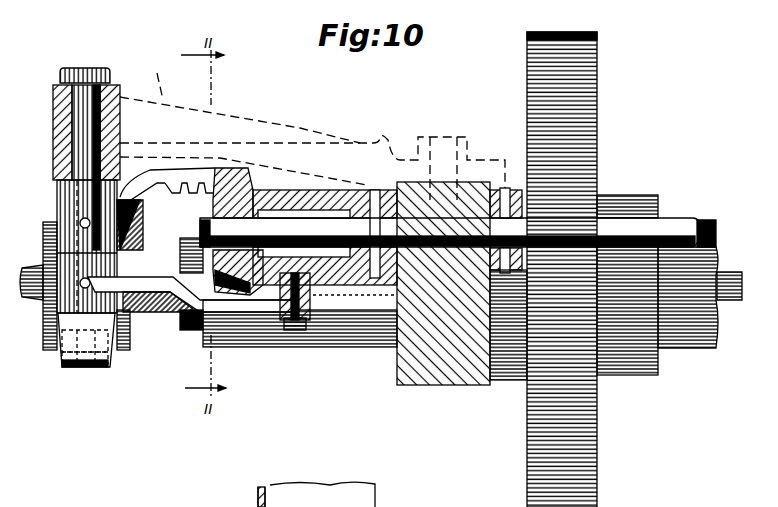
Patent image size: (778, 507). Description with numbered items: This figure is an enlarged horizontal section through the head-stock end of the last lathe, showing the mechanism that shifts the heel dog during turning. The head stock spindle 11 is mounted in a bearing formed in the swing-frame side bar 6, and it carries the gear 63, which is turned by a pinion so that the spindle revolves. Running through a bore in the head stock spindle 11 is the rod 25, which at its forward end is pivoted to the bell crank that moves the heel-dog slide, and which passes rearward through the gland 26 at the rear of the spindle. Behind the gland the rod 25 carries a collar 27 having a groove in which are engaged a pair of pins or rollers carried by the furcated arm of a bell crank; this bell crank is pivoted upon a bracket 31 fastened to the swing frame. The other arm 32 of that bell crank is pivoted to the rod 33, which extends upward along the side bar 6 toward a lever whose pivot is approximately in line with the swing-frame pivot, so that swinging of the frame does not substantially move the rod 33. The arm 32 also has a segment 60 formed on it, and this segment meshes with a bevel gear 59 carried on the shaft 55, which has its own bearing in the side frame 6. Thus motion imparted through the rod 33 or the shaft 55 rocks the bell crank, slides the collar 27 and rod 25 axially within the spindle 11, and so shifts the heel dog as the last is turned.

The swing-frame side-bar 6 is at (448, 378).
The head stock spindle 11 is at (362, 347).
The rod 25 is at (145, 276).
The gland 26 is at (195, 331).
The collar 27 is at (118, 336).
The bracket 31 is at (120, 98).
The arm of the bell crank 32 is at (255, 312).
The rod 33 is at (305, 285).
The shaft 55 is at (673, 223).
The bevel gear 59 is at (265, 190).
The segment 60 is at (218, 168).
The gear 63 is at (580, 122).